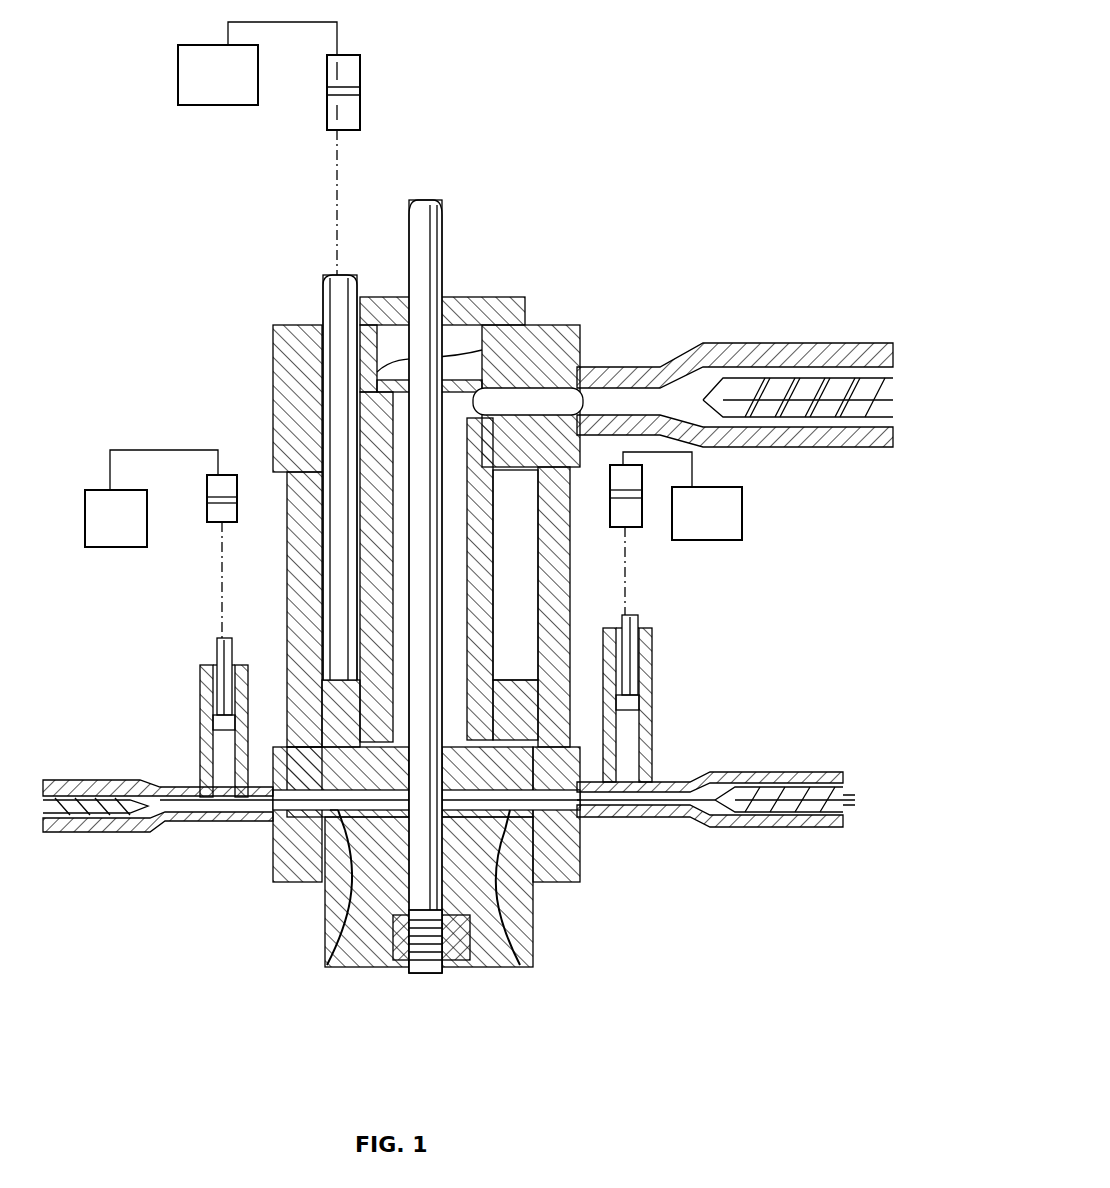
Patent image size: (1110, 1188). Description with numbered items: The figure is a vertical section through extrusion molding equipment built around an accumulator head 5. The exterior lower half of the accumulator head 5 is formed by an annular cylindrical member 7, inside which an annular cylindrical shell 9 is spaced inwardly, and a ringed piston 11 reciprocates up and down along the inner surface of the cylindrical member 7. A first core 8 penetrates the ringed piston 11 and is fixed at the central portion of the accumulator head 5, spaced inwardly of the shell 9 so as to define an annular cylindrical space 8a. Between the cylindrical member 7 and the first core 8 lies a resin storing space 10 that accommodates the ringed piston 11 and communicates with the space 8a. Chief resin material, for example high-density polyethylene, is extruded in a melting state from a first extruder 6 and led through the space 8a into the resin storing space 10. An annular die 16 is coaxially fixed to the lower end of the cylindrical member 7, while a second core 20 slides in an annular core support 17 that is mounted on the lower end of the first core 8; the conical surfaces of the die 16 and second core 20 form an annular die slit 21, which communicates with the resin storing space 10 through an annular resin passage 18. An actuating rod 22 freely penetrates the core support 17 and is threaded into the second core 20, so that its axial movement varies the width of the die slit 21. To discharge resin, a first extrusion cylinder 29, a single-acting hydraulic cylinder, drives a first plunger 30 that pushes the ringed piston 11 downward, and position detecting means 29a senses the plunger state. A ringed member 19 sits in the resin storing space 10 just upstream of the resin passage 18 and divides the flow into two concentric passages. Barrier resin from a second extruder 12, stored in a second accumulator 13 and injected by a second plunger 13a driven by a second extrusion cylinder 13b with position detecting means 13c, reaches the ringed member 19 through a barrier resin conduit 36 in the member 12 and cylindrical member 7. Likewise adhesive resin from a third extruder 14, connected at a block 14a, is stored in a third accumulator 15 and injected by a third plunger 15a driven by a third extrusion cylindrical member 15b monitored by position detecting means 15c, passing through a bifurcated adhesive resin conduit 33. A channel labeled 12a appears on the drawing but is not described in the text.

The accumulator head 5 is at (542, 312).
The first extruder 6 is at (768, 342).
The annular cylindrical member 7 is at (570, 568).
The first core 8 is at (470, 500).
The annular cylindrical space 8a is at (380, 545).
The annular cylindrical shell 9 is at (494, 566).
The resin storing space 10 is at (312, 752).
The ringed piston 11 is at (518, 678).
The second extruder 12 is at (88, 776).
The left feed channel 12a is at (178, 786).
The second accumulator 13 is at (198, 685).
The second plunger 13a is at (220, 640).
The second extrusion cylinder 13b is at (208, 510).
The position detecting means 13c is at (95, 548).
The third extruder 14 is at (764, 772).
The block 14a is at (665, 780).
The third accumulator 15 is at (655, 676).
The third plunger 15a is at (640, 618).
The third extrusion cylindrical member 15b is at (634, 528).
The position detecting means 15c is at (742, 512).
The annular die 16 is at (527, 913).
The core support 17 is at (578, 850).
The annular resin passage 18 is at (318, 880).
The ringed member 19 is at (282, 840).
The second core 20 is at (508, 965).
The die slit 21 is at (330, 965).
The actuating rod 22 is at (442, 212).
The first extrusion cylinder 29 is at (362, 70).
The position detecting means 29a is at (220, 105).
The first plunger 30 is at (330, 388).
The adhesive resin conduit 33 is at (627, 800).
The barrier resin conduit 36 is at (240, 812).